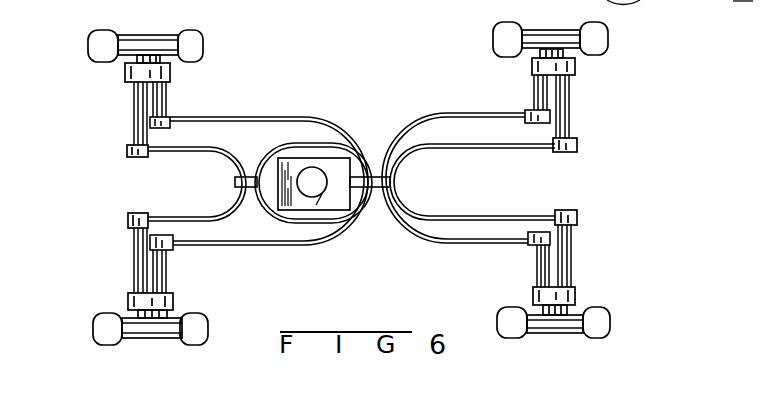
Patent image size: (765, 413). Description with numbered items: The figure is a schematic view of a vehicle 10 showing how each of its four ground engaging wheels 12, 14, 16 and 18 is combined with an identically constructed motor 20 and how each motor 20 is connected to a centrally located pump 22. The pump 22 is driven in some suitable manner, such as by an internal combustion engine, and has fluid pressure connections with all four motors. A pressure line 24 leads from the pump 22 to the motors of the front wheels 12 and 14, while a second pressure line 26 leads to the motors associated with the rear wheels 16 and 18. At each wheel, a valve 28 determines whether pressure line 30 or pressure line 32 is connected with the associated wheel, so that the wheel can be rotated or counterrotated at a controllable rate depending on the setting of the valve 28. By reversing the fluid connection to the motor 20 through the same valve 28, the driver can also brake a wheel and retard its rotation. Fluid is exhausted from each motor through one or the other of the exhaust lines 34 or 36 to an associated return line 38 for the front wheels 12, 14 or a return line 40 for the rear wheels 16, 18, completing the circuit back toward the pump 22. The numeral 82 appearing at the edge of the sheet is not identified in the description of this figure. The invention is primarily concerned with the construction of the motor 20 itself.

The vehicle 10 is at (362, 92).
The ground engaging wheel 12 is at (93, 32).
The ground engaging wheel 14 is at (208, 323).
The ground engaging wheel 16 is at (507, 27).
The ground engaging wheel 18 is at (611, 318).
The motor 20 is at (125, 73).
The pump 22 is at (318, 164).
The pressure line 24 is at (229, 155).
The second pressure line 26 is at (493, 149).
The valve 28 is at (133, 157).
The pressure line 30 is at (133, 102).
The pressure line 32 is at (140, 128).
The exhaust line 34 is at (167, 90).
The exhaust line 36 is at (167, 103).
The return line 38 is at (287, 114).
The return line 40 is at (437, 112).
The element of adjacent figure 82 is at (680, 11).